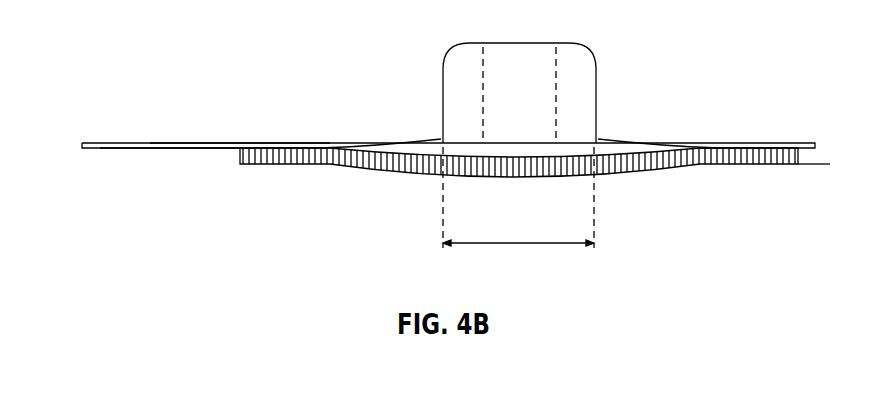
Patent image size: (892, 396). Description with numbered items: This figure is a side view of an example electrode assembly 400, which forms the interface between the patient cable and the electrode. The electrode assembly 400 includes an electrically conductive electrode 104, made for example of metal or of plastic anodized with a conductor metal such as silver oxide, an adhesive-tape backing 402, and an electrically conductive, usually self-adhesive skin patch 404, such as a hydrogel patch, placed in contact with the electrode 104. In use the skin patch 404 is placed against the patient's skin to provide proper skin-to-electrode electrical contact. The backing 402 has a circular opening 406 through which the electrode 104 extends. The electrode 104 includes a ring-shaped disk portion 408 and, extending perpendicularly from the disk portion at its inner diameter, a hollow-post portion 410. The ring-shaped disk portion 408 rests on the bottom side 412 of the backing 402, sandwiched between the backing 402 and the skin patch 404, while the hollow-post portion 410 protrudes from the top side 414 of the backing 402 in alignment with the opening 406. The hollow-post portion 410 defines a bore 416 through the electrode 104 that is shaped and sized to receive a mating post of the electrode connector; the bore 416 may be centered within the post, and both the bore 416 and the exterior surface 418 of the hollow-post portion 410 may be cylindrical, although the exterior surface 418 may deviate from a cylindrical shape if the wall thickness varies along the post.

The electrode assembly 400 is at (675, 30).
The adhesive-tape backing 402 is at (107, 144).
The skin patch 404 is at (668, 161).
The opening 406 is at (518, 246).
The ring-shaped disk portion 408 is at (417, 152).
The hollow-post portion 410 is at (456, 60).
The bottom side 412 is at (147, 155).
The top side 414 is at (209, 138).
The bore 416 is at (527, 64).
The exterior surface 418 is at (603, 75).
The electrode 104 is at (598, 121).